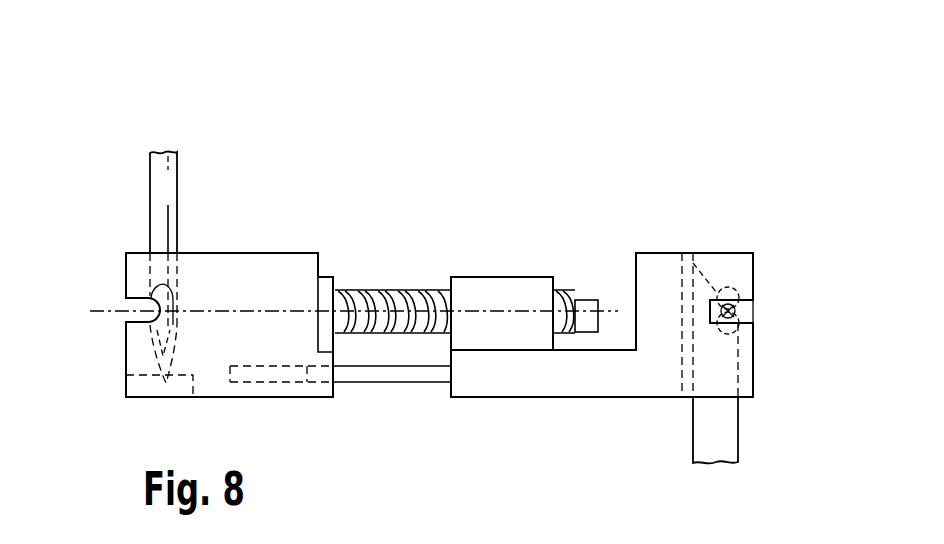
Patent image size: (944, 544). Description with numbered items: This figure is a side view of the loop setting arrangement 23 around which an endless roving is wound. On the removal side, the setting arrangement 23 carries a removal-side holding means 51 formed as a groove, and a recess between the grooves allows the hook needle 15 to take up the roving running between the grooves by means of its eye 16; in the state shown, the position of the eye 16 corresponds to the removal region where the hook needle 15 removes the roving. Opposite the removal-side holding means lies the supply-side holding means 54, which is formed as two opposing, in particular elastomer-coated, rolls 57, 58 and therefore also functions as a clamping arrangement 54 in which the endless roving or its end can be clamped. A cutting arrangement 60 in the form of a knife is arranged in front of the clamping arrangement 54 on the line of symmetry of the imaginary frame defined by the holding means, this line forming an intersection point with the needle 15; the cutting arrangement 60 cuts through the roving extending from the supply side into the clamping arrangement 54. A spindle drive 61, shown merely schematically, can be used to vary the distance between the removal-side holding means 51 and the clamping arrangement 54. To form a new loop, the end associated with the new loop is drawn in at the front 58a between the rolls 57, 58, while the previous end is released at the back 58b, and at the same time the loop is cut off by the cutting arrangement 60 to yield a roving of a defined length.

The setting arrangement 23 is at (112, 112).
The hook needle 15 is at (190, 207).
The removal-side holding means 51 is at (135, 271).
The eye 16 is at (150, 326).
The spindle drive 61 is at (483, 260).
The holding means / clamping arrangement 54 is at (766, 307).
The roll 57 is at (742, 301).
The roll 58 is at (742, 311).
The front 58a is at (745, 318).
The back 58b is at (717, 310).
The cutting arrangement 60 is at (722, 434).